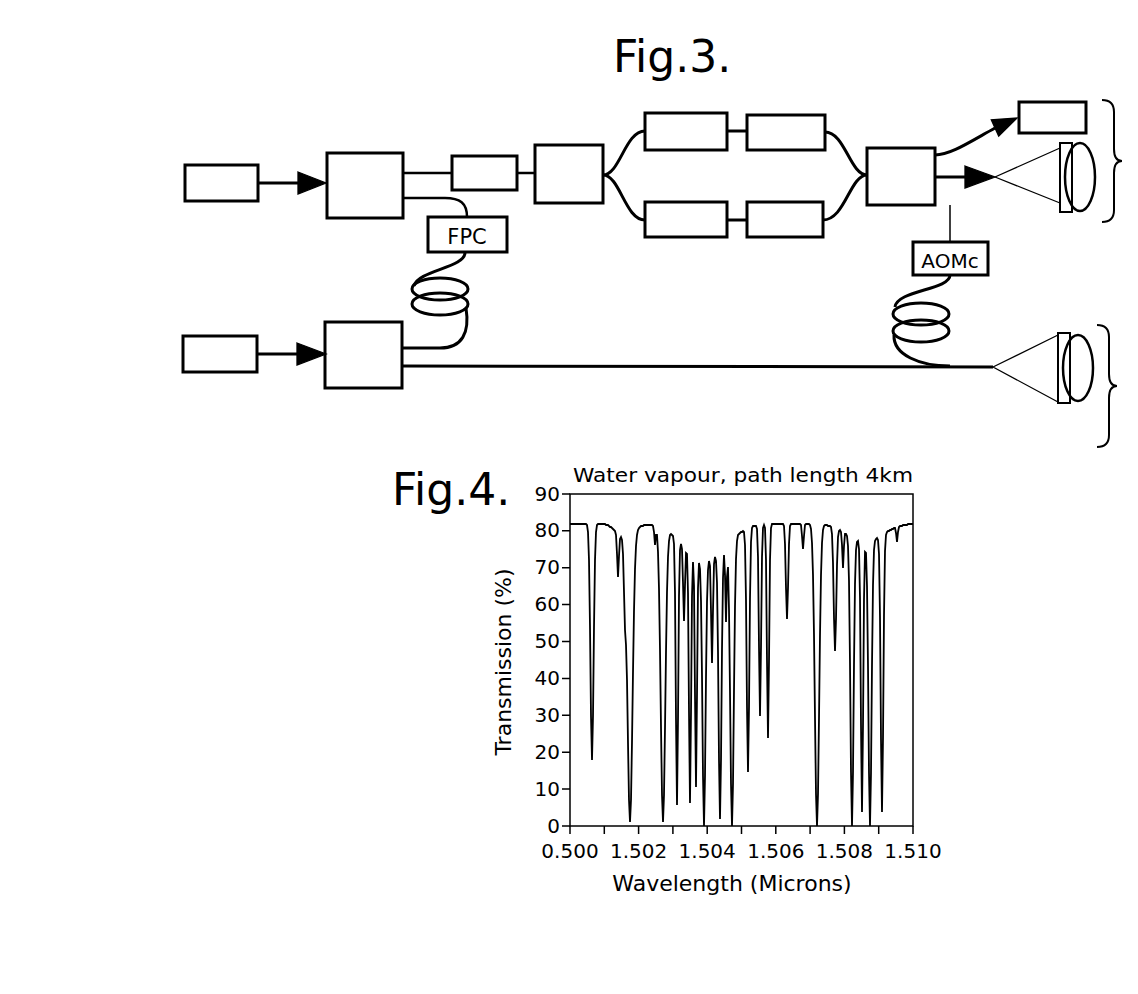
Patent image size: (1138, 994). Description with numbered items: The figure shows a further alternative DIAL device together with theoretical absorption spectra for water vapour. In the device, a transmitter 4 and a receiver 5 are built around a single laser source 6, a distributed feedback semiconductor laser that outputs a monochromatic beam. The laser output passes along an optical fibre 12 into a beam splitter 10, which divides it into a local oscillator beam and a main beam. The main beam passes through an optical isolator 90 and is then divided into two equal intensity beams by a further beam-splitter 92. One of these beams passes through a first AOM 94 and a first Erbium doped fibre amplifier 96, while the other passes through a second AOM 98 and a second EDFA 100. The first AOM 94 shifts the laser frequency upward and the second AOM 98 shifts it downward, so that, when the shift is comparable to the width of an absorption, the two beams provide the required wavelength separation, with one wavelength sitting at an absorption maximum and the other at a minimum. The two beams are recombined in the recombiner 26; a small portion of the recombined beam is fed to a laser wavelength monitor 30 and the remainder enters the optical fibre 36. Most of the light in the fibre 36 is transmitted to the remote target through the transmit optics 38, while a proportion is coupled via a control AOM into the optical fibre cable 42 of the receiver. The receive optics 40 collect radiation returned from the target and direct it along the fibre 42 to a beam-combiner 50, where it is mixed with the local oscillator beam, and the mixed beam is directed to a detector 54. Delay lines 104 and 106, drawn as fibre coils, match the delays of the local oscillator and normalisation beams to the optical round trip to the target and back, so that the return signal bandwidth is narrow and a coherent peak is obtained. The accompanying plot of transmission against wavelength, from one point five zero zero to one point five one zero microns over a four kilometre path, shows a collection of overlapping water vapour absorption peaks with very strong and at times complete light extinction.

The transmitter 4 is at (1119, 161).
The receiver 5 is at (1115, 386).
The laser source 6 is at (208, 165).
The beam splitter 10 is at (352, 160).
The optical fibre 12 is at (277, 175).
The recombiner 26 is at (897, 160).
The laser wavelength monitor 30 is at (1073, 103).
The optical fibre 36 is at (956, 173).
The transmit optics 38 is at (1066, 220).
The receive optics 40 is at (1071, 414).
The optical fibre cable 42 is at (620, 363).
The beam-combiner 50 is at (337, 388).
The detector 54 is at (212, 372).
The optical isolator 90 is at (505, 160).
The beam-splitter 92 is at (573, 158).
The first AOM 94 is at (682, 150).
The first Erbium doped fibre amplifier 96 is at (785, 118).
The second AOM 98 is at (683, 237).
The second EDFA 100 is at (782, 237).
The delay line 104 is at (480, 305).
The delay line 106 is at (884, 325).